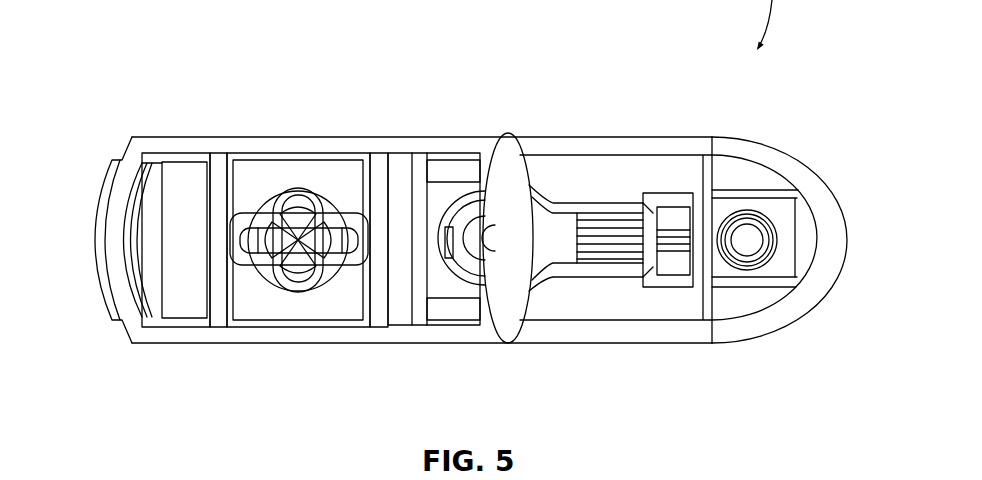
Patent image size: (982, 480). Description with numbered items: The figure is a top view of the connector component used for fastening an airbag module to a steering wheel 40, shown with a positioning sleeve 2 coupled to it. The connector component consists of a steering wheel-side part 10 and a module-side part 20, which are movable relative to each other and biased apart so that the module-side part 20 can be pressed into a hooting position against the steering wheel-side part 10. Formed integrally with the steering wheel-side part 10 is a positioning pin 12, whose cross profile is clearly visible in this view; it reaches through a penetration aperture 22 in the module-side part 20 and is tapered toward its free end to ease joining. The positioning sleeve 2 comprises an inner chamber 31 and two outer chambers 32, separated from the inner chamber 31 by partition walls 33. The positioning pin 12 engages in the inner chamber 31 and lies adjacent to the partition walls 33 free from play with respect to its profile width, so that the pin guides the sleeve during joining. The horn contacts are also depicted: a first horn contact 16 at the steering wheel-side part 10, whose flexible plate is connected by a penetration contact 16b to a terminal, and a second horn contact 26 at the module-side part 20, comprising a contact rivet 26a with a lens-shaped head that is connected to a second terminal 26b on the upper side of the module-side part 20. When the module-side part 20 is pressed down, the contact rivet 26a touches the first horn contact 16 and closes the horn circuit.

The positioning sleeve 2 is at (127, 345).
The steering wheel-side part 10 is at (798, 311).
The positioning pin 12 is at (280, 220).
The first horn contact 16 is at (789, 173).
The penetration contact 16b is at (773, 217).
The module-side part 20 is at (603, 330).
The penetration aperture 22 is at (340, 218).
The second horn contact 26 is at (611, 166).
The contact rivet 26a is at (497, 237).
The second terminal 26b is at (563, 233).
The inner chamber 31 is at (323, 306).
The outer chambers 32 is at (190, 302).
The partition walls 33 is at (220, 290).
The steering wheel 40 is at (812, 479).